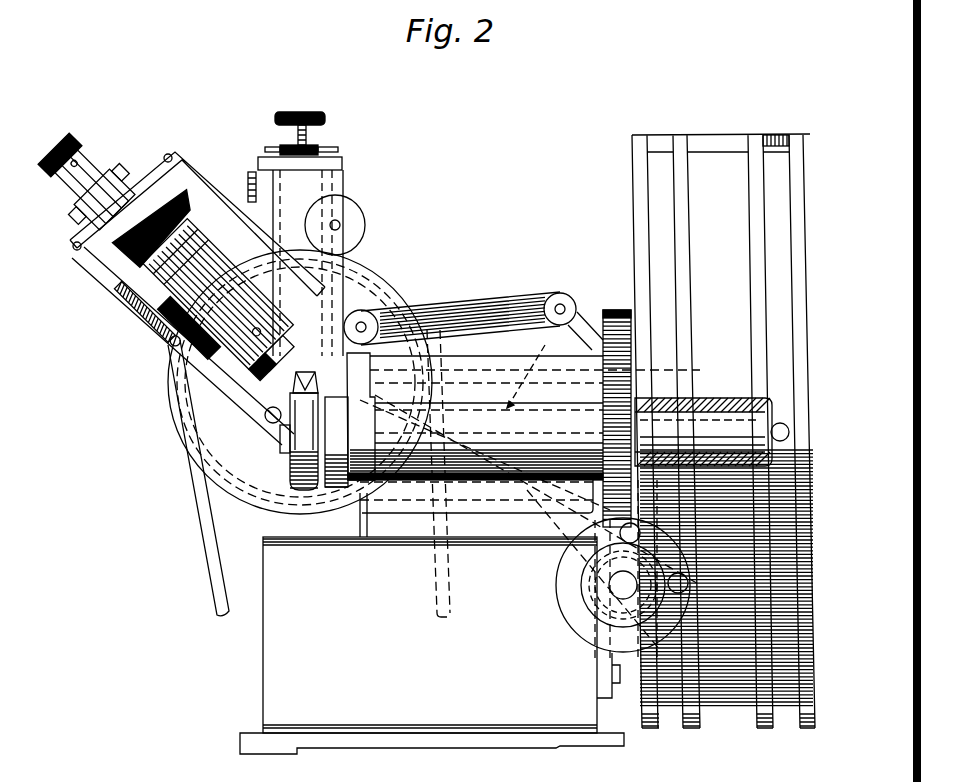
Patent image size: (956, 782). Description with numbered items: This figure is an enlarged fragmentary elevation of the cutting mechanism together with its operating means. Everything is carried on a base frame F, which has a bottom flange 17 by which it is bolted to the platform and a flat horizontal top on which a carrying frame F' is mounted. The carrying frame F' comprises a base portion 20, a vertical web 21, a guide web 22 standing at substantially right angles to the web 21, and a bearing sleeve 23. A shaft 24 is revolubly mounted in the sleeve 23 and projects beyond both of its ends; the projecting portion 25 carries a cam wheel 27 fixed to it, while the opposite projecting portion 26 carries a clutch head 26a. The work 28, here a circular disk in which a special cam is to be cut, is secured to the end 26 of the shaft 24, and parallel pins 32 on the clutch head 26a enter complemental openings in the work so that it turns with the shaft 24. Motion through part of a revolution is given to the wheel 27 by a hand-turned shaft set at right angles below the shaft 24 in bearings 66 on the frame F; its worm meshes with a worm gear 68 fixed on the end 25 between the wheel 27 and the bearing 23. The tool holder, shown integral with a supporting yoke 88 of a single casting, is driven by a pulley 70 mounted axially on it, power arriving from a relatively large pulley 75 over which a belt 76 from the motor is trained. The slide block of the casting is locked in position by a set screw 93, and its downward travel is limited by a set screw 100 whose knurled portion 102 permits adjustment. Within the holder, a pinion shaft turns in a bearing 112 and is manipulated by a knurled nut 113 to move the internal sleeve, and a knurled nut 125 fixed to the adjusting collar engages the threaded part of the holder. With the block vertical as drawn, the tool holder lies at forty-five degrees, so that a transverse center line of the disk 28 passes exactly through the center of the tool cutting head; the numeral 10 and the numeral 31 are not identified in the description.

The eyepiece 10 is at (57, 147).
The pulley 70 is at (163, 160).
The set screw 93 is at (250, 184).
The supporting yoke 88 is at (233, 253).
The knurled portion 102 is at (318, 113).
The set screw 100 is at (306, 138).
The guide web 22 is at (479, 310).
The worm gear 68 is at (616, 308).
The cam wheel 27 is at (750, 364).
The projecting portion of shaft 25 is at (703, 418).
The shaft 24 is at (537, 364).
The vertical web 21 is at (372, 380).
The bearing sleeve 23 is at (530, 503).
The knurled nut 125 is at (150, 237).
The bearing 112 is at (150, 302).
The knurled nut 113 is at (170, 344).
The pulley 75 is at (176, 398).
The pins 32 is at (290, 405).
The arm 31 is at (280, 441).
The work 28 is at (288, 470).
The projecting portion of shaft 26 is at (345, 500).
The clutch head 26a is at (348, 492).
The carrying frame F' is at (477, 529).
The base portion 20 is at (530, 520).
The bearings 66 is at (598, 618).
The belt 76 is at (212, 577).
The base frame F is at (423, 635).
The bottom flange 17 is at (364, 742).